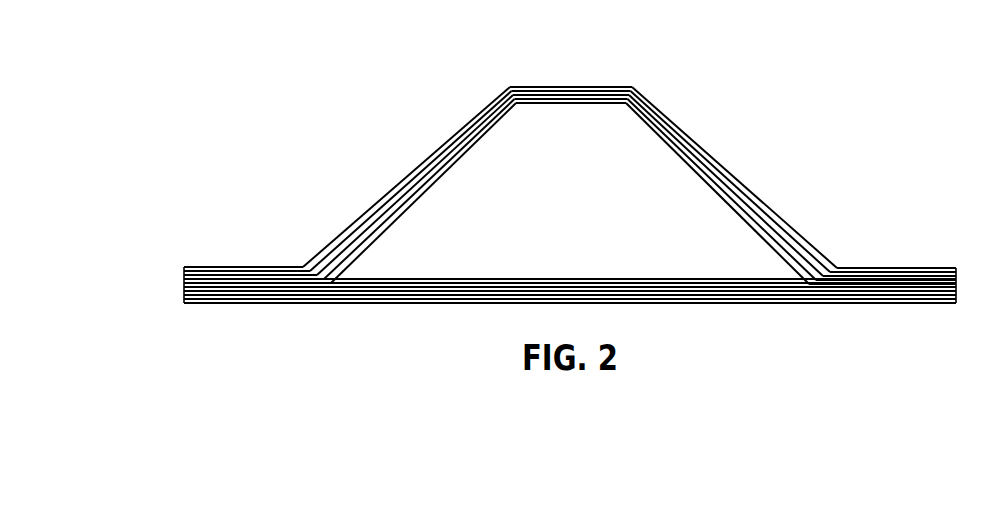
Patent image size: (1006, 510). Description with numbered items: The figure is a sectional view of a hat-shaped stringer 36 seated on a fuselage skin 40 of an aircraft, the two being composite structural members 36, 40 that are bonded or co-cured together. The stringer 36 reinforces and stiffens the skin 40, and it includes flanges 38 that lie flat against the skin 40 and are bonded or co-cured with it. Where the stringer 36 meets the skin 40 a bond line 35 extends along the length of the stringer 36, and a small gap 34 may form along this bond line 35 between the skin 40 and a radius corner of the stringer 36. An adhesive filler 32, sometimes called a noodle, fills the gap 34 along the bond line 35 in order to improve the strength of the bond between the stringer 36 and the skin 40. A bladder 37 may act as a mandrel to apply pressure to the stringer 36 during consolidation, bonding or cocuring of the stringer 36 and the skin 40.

The adhesive filler 32 is at (582, 173).
The gap 34 is at (797, 310).
The bond line 35 is at (826, 296).
The hat-shaped stringer 36 is at (572, 86).
The bladder 37 is at (650, 176).
The flanges 38 is at (287, 277).
The fuselage skin 40 is at (224, 297).